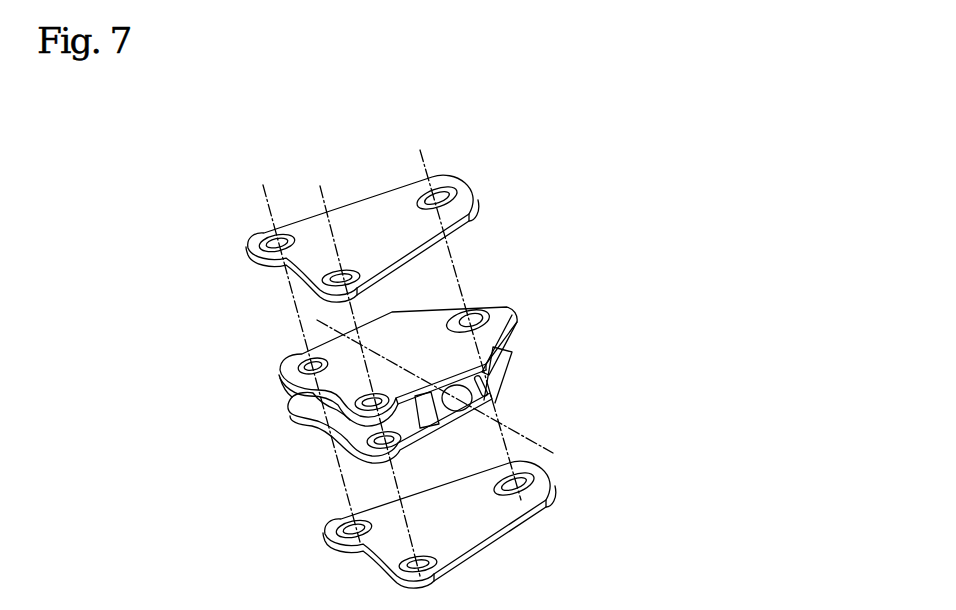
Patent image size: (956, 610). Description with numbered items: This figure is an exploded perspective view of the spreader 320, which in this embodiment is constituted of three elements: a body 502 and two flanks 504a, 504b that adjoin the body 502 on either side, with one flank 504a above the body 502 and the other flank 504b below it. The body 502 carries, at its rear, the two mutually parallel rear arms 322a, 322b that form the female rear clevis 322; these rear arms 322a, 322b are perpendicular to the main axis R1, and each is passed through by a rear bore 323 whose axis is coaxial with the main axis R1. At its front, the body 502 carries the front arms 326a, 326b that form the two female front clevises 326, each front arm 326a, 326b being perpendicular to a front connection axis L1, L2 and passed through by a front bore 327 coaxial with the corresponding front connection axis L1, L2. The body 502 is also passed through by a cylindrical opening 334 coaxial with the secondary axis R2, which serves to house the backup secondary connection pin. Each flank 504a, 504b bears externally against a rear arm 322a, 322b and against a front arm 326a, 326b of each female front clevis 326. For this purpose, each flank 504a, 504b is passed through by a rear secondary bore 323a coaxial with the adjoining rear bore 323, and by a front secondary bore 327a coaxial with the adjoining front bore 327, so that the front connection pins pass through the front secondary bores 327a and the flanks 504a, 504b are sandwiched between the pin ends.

The spreader 320 is at (648, 252).
The body 502 is at (165, 429).
The flank 504a is at (192, 255).
The flank 504b is at (275, 551).
The female rear clevis 322 is at (516, 324).
The rear arm 322a is at (510, 316).
The rear arm 322b is at (514, 352).
The rear bore 323 is at (472, 310).
The rear secondary bore 323a is at (457, 182).
The female front clevis 326 is at (297, 395).
The front arm 326a is at (297, 377).
The front arm 326b is at (298, 428).
The front bore 327 is at (298, 358).
The front secondary bore 327a is at (250, 240).
The cylindrical opening 334 is at (473, 400).
The front connection axis L1 is at (291, 357).
The front connection axis L2 is at (357, 372).
The main axis R1 is at (449, 315).
The secondary axis R2 is at (450, 389).